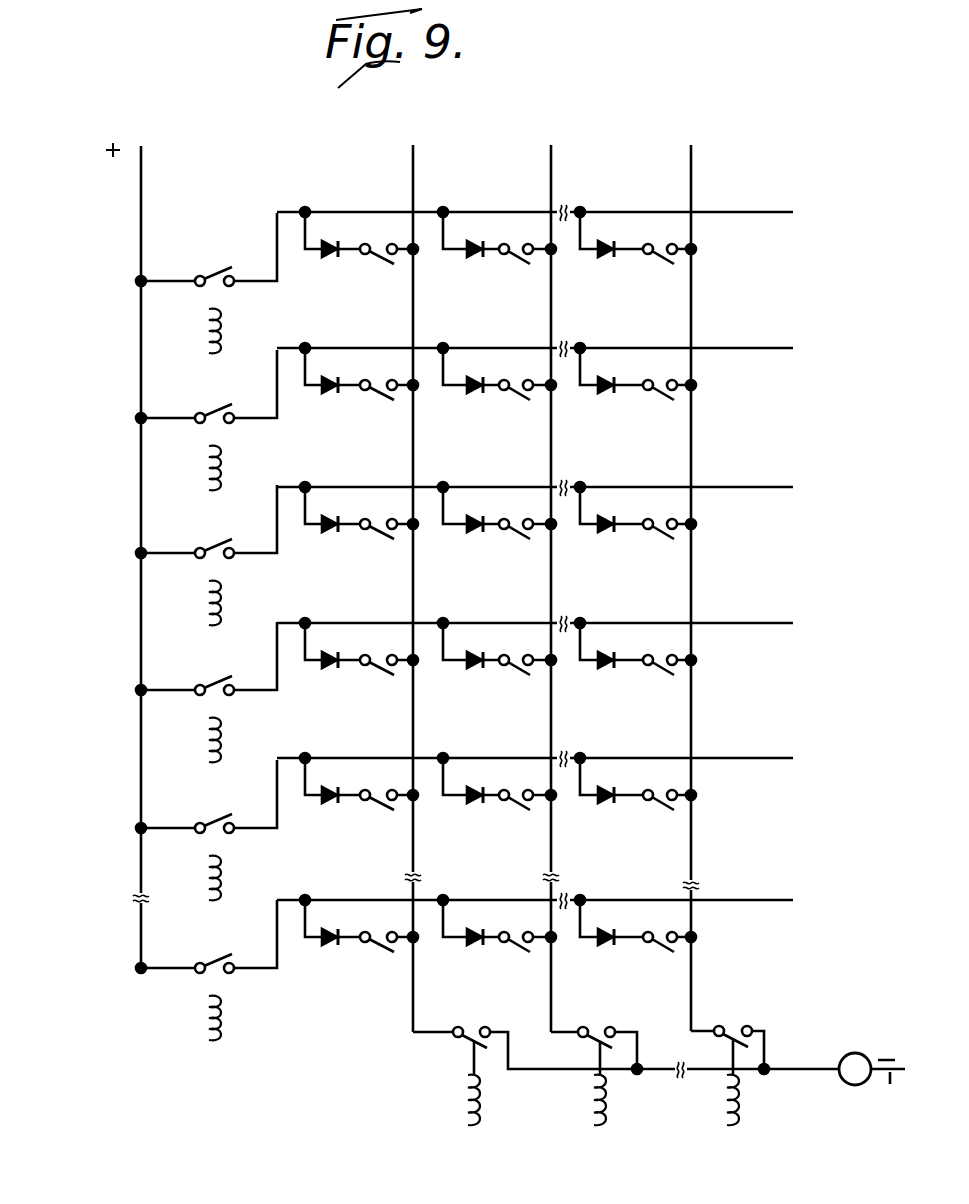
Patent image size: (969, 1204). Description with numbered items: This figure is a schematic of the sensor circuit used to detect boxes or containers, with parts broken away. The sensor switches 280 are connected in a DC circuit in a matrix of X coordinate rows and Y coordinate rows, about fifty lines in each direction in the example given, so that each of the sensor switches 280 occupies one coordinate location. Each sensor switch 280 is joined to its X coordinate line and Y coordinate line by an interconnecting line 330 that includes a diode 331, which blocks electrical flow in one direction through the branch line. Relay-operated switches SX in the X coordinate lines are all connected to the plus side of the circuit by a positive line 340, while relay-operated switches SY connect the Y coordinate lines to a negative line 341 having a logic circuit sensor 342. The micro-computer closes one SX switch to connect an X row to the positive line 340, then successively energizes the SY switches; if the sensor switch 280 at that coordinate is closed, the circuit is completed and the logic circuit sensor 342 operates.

The positive line 340 is at (141, 200).
The sensor switch 280 is at (379, 259).
The interconnecting line 330 is at (306, 252).
The diode 331 is at (334, 246).
The negative line 341 is at (881, 1091).
The logic circuit sensor 342 is at (860, 1082).